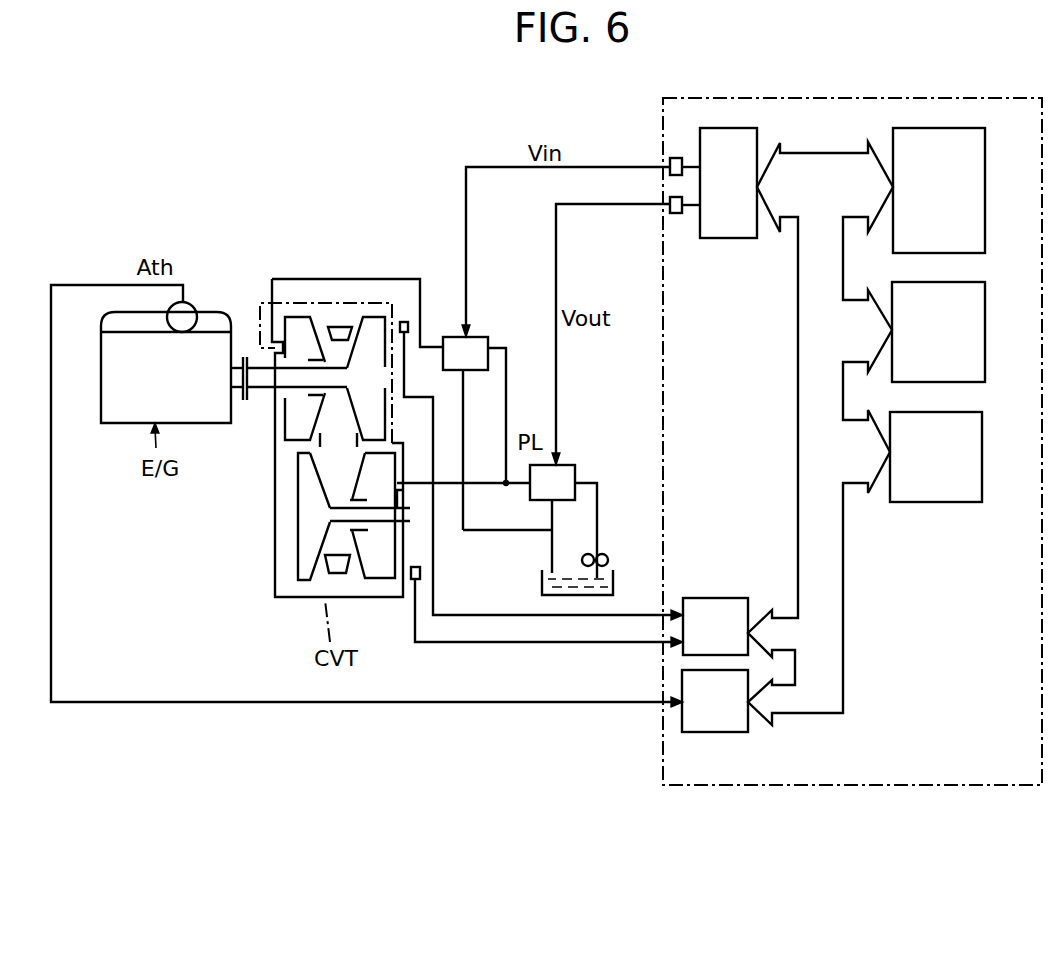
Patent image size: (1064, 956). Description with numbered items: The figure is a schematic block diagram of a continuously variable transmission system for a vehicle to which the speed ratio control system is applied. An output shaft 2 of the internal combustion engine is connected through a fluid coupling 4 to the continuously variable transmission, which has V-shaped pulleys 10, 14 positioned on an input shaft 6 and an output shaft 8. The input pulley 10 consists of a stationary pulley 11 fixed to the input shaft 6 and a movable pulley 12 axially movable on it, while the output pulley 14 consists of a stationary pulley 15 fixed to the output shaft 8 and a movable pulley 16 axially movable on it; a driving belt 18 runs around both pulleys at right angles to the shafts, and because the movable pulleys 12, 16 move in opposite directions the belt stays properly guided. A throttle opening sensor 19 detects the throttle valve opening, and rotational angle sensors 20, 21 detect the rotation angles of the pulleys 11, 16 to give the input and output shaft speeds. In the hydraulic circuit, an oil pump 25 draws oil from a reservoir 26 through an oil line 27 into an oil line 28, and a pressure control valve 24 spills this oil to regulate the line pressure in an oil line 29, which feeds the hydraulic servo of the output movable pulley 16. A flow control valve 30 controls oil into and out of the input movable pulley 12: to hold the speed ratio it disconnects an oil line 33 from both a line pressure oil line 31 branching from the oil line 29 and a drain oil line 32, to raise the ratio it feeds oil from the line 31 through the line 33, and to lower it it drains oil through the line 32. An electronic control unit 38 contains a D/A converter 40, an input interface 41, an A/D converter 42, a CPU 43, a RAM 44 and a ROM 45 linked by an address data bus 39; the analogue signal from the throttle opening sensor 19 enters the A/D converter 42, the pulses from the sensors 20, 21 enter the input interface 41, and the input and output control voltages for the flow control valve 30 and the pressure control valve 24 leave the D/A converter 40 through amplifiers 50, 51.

The output shaft 2 is at (238, 360).
The fluid coupling 4 is at (243, 401).
The input shaft 6 is at (262, 389).
The output shaft 8 is at (410, 522).
The V-shaped pulley 10 is at (322, 310).
The stationary pulley 11 is at (375, 322).
The movable pulley 12 is at (300, 320).
The V-shaped pulley 14 is at (312, 588).
The stationary pulley 15 is at (293, 580).
The movable pulley 16 is at (384, 575).
The driving belt 18 is at (345, 327).
The throttle opening sensor 19 is at (185, 305).
The rotational angle sensor 20 is at (406, 334).
The rotational angle sensor 21 is at (421, 573).
The pressure control valve 24 is at (562, 470).
The oil pump 25 is at (604, 553).
The reservoir 26 is at (616, 583).
The oil line 27 is at (600, 496).
The oil line 28 is at (546, 519).
The oil line 29 is at (486, 483).
The flow control valve 30 is at (470, 340).
The line pressure oil line 31 is at (507, 378).
The drain oil line 32 is at (464, 424).
The oil line 33 is at (372, 302).
The electronic control unit 38 is at (865, 97).
The address data bus 39 is at (800, 340).
The D/A converter 40 is at (730, 239).
The input interface 41 is at (717, 604).
The A/D converter 42 is at (714, 732).
The CPU 43 is at (986, 178).
The RAM 44 is at (986, 330).
The ROM 45 is at (984, 456).
The amplifier 50 is at (680, 156).
The amplifier 51 is at (677, 214).